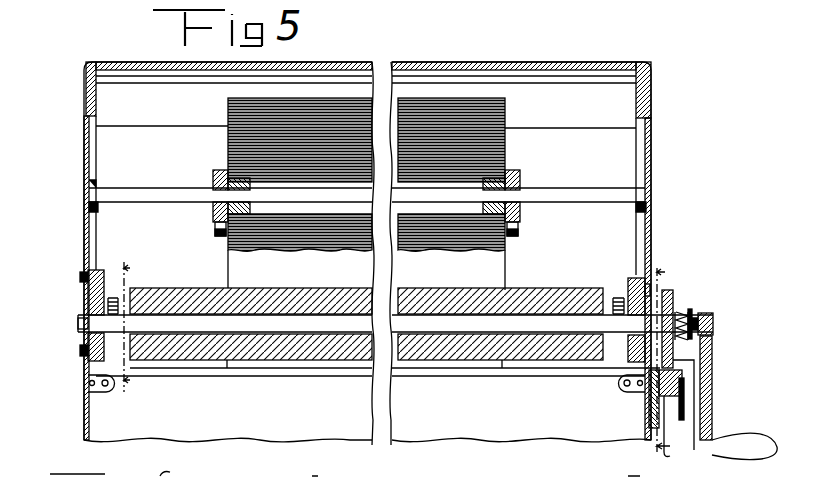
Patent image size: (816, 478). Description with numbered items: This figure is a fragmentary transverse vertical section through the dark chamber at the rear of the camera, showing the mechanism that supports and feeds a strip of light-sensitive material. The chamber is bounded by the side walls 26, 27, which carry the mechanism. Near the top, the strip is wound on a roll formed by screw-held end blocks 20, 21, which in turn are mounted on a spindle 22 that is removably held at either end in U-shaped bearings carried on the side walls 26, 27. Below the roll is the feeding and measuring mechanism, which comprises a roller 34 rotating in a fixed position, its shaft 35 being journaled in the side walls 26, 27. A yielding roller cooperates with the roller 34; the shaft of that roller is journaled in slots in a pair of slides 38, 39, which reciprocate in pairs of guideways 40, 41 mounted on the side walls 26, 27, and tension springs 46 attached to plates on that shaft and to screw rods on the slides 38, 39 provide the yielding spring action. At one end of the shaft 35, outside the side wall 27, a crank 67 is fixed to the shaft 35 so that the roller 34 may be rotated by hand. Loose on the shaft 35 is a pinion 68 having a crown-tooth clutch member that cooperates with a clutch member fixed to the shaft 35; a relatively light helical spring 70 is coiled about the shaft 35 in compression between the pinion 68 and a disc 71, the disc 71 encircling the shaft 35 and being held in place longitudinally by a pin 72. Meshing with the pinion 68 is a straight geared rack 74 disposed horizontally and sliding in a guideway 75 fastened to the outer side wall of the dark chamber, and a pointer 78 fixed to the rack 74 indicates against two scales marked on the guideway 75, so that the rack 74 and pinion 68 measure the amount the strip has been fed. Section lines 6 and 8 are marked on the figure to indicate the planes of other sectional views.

The side wall 26 is at (84, 156).
The side wall 27 is at (651, 164).
The end block 20 is at (520, 172).
The end block 21 is at (222, 166).
The spindle 22 is at (540, 196).
The roller 34 is at (541, 346).
The shaft 35 is at (475, 334).
The slide 38 is at (88, 298).
The slide 39 is at (628, 300).
The guideway 40 is at (104, 280).
The guideway 41 is at (651, 262).
The tension spring 46 is at (120, 306).
The section line 6- 6 is at (133, 325).
The section line 8- 8 is at (676, 366).
The pinion 68 is at (674, 300).
The helical spring 70 is at (692, 318).
The disc 71 is at (693, 318).
The pin 72 is at (712, 342).
The geared rack 74 is at (683, 380).
The pointer 78 is at (684, 394).
The guideway 75 is at (654, 431).
The crank 67 is at (712, 412).